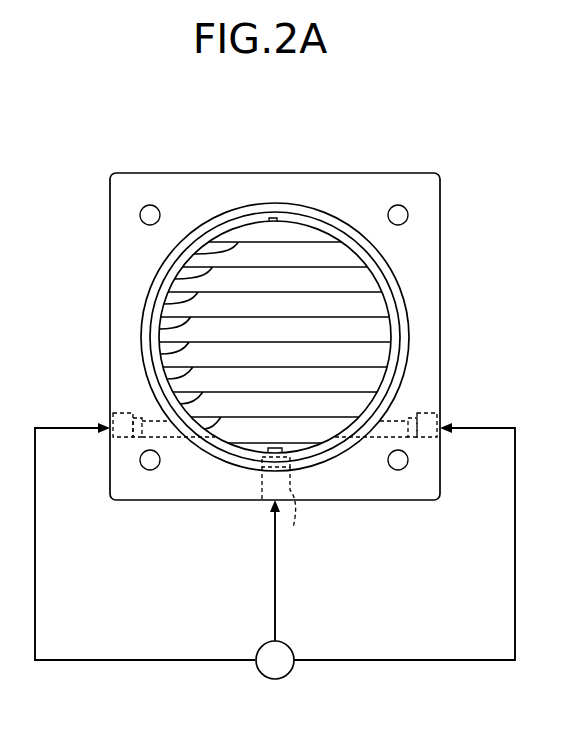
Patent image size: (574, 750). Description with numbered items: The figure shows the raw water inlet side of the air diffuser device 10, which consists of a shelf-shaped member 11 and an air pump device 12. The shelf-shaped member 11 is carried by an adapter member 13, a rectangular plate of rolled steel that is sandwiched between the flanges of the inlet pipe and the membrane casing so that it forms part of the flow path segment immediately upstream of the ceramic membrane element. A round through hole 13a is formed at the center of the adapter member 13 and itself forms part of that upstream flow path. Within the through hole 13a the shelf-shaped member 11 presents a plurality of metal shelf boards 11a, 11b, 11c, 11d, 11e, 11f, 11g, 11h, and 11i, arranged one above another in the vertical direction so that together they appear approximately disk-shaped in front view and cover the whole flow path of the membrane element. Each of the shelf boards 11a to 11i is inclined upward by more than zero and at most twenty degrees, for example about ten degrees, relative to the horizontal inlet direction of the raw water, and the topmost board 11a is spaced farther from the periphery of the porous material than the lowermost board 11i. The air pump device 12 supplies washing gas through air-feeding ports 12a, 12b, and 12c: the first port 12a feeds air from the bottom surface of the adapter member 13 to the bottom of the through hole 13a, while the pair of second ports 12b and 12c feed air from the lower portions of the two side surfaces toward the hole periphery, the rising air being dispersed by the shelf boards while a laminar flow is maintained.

The air diffuser device 10 is at (293, 150).
The shelf-shaped member 11 is at (388, 326).
The shelf board 11a is at (211, 252).
The shelf board 11b is at (186, 277).
The shelf board 11c is at (171, 302).
The shelf board 11d is at (164, 327).
The shelf board 11e is at (162, 352).
The shelf board 11f is at (166, 377).
The shelf board 11g is at (176, 402).
The shelf board 11h is at (230, 418).
The shelf board 11i is at (253, 445).
The air pump device 12 is at (290, 673).
The air-feeding port 12a is at (288, 505).
The air-feeding port 12b is at (118, 444).
The air-feeding port 12c is at (432, 444).
The adapter member 13 is at (345, 501).
The through hole 13a is at (383, 272).